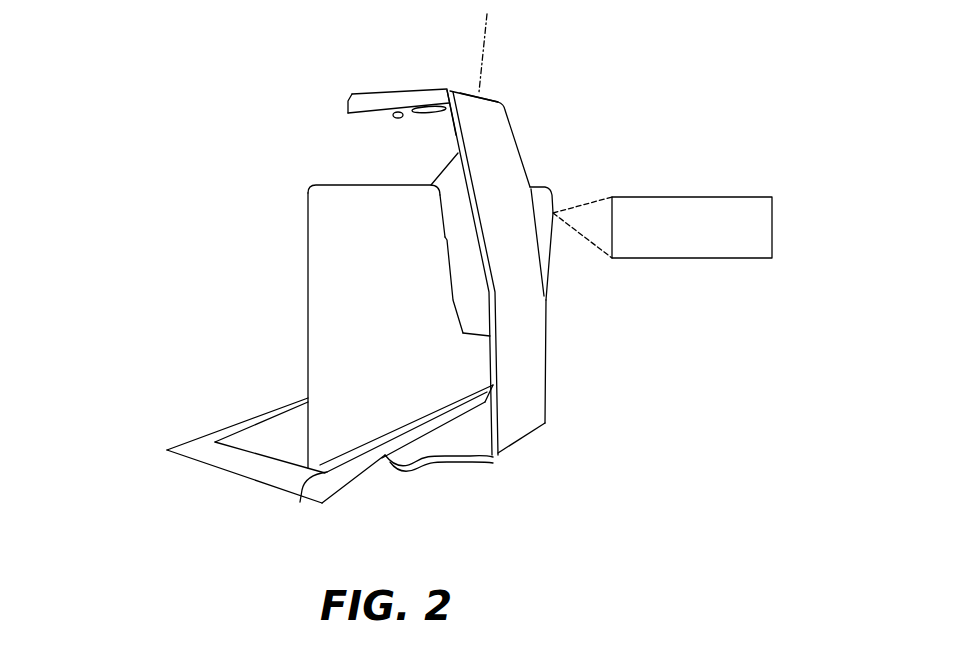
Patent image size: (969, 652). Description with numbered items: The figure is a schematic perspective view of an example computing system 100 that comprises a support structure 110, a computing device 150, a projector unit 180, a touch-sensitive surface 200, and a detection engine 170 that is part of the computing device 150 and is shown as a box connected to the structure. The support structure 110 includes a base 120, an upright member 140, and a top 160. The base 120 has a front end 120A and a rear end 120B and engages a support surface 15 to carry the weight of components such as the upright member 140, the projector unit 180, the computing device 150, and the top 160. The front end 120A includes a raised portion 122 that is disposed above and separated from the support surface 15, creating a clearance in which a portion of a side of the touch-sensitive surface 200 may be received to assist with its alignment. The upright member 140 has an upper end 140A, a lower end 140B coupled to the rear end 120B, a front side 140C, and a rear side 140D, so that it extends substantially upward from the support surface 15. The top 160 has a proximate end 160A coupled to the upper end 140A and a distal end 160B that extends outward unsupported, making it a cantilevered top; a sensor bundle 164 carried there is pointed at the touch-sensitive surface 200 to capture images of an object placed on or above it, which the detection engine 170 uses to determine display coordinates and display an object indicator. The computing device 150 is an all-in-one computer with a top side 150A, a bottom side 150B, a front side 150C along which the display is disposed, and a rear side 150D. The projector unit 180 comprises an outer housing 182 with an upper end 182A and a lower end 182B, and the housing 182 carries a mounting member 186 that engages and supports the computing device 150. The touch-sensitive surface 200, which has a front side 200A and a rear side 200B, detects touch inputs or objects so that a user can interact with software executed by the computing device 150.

The computing system 100 is at (183, 195).
The support surface 15 is at (150, 500).
The support structure 110 is at (590, 190).
The base 120 is at (441, 467).
The front end 120A is at (436, 422).
The rear end 120B is at (499, 468).
The raised portion 122 is at (396, 463).
The upright member 140 is at (521, 373).
The upper end 140A is at (504, 97).
The lower end 140B is at (521, 447).
The front side 140C is at (455, 136).
The rear side 140D is at (517, 158).
The computing device 150 is at (307, 202).
The top side 150A is at (368, 185).
The bottom side 150B is at (344, 516).
The front side 150C is at (307, 300).
The rear side 150D is at (390, 267).
The top 160 is at (437, 82).
The proximate end 160A is at (479, 97).
The distal end 160B is at (344, 112).
The sensor bundle 164 is at (393, 118).
The detection engine 170 is at (692, 262).
The projector unit 180 is at (494, 268).
The outer housing 182 is at (475, 300).
The upper end 182A is at (475, 155).
The lower end 182B is at (473, 339).
The mounting member 186 is at (441, 205).
The touch-sensitive surface 200 is at (198, 448).
The front side 200A is at (238, 425).
The rear side 200B is at (346, 513).